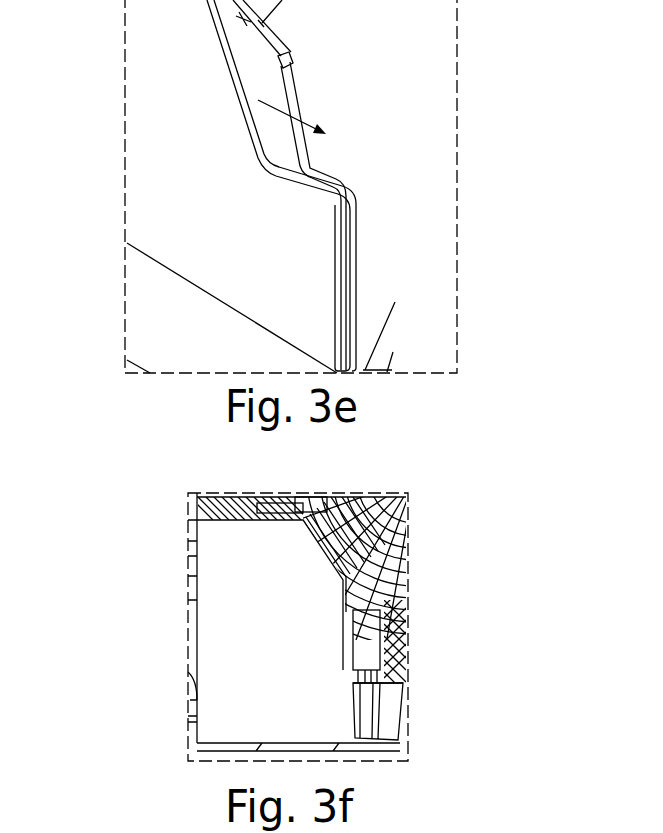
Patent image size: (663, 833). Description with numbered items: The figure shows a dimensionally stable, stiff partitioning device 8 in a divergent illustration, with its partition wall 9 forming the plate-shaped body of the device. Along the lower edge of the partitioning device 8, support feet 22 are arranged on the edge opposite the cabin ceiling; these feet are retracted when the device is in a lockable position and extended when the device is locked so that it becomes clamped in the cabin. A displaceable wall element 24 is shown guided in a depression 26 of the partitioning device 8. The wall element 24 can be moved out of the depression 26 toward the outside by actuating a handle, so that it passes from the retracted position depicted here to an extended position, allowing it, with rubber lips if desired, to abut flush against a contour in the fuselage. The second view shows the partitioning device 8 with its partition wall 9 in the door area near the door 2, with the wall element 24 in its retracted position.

In FIG. 3F, the door 2 is at (407, 633).
In FIG. 3E, the partitioning device 8 is at (136, 62).
In FIG. 3F, the partitioning device 8 is at (214, 551).
In FIG. 3E, the partition wall 9 is at (228, 222).
In FIG. 3F, the partition wall 9 is at (289, 640).
In FIG. 3E, the support feet 22 is at (176, 280).
In FIG. 3E, the displaceable wall element 24 is at (290, 58).
In FIG. 3E, the depression 26 is at (372, 174).